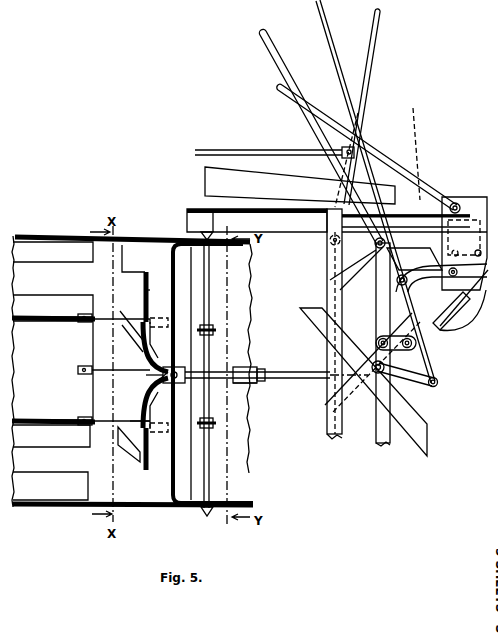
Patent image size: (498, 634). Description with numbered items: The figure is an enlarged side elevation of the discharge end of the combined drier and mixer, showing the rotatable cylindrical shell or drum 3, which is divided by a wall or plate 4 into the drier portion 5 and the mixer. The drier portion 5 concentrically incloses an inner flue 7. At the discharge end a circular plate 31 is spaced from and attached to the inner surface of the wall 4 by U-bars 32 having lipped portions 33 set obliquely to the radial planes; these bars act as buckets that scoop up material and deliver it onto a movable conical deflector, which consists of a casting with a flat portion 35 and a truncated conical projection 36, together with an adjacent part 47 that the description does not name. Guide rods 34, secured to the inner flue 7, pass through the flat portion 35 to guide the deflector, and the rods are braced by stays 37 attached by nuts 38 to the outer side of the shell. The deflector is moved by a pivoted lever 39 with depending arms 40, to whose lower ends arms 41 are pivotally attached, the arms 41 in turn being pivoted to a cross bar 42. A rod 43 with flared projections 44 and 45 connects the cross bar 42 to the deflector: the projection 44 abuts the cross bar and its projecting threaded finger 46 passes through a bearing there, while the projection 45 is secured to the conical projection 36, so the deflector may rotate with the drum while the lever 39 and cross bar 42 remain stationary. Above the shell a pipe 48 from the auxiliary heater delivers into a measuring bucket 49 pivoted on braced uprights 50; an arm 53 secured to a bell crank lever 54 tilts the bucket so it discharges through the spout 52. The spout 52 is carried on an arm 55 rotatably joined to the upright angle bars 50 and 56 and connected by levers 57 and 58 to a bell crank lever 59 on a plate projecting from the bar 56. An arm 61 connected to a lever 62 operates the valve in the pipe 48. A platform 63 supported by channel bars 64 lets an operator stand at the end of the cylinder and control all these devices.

The rotatable cylindrical shell or drum 3 is at (55, 236).
The wall or plate 4 is at (176, 278).
The drier portion 5 is at (466, 201).
The inner flue 7 is at (52, 321).
The circular plate 31 is at (146, 290).
The U-bars 32 is at (149, 292).
The lipped portions 33 is at (122, 258).
The guide rods 34 is at (100, 318).
The flat portion 35 is at (146, 412).
The truncated conical projection 36 is at (160, 390).
The stays 37 is at (210, 268).
The nuts 38 is at (206, 232).
The pivoted lever 39 is at (344, 82).
The arms 40 is at (424, 350).
The arms 41 is at (286, 372).
The cross bar 42 is at (240, 367).
The rod 43 is at (238, 383).
The flared projection 44 is at (250, 383).
The flared projection 45 is at (176, 367).
The projecting threaded finger 46 is at (261, 369).
The arm 47 is at (150, 382).
The pipe 48 is at (278, 174).
The measuring bucket 49 is at (437, 270).
The uprights 50 is at (378, 440).
The spout 52 is at (405, 395).
The arm 53 is at (410, 178).
The bell crank lever 54 is at (456, 243).
The arm 55 is at (372, 367).
The upright angle bar 56 is at (327, 432).
The lever 57 is at (408, 380).
The lever 58 is at (396, 338).
The bell crank lever 59 is at (282, 65).
The arm 61 is at (245, 150).
The lever 62 is at (374, 26).
The platform 63 is at (292, 211).
The channel bars 64 is at (330, 241).